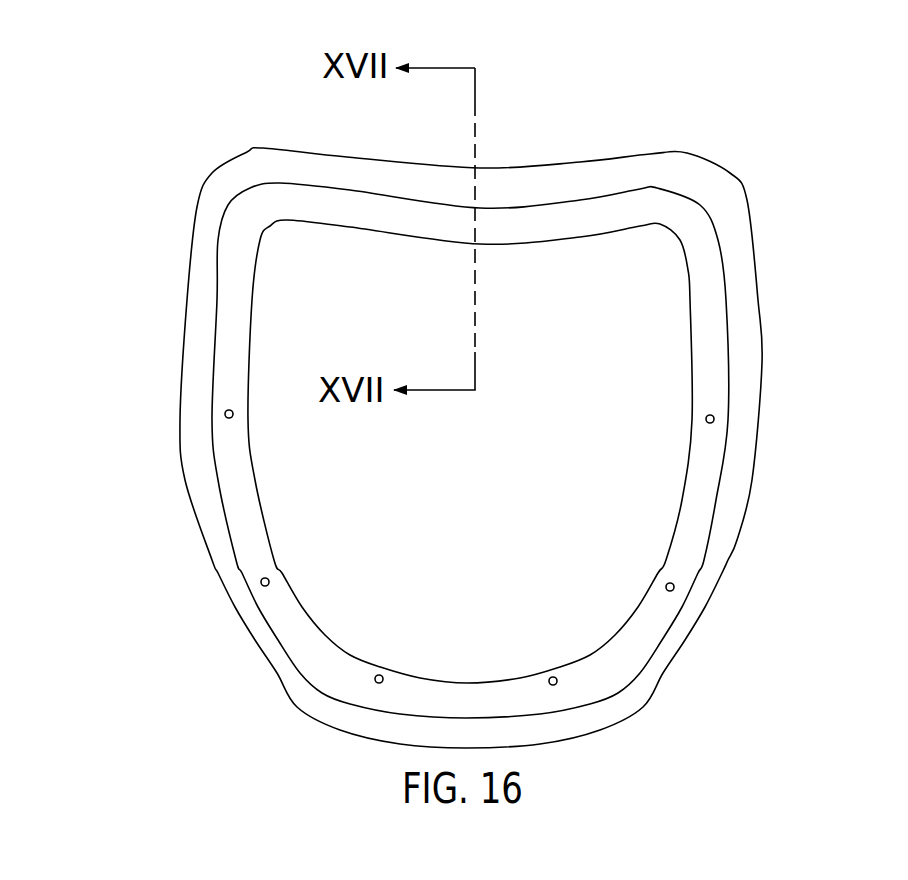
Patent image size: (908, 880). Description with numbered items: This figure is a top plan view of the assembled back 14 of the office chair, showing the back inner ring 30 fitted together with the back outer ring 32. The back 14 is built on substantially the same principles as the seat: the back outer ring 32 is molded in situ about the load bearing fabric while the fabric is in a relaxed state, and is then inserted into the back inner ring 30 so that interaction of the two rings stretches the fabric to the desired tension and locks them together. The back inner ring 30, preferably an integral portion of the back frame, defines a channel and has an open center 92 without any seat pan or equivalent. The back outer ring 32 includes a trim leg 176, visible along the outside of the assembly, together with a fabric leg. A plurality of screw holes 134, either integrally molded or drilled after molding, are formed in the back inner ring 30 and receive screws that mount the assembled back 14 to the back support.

The back 14 is at (519, 425).
The back inner ring 30 is at (692, 358).
The back outer ring 32 is at (762, 296).
The open center 92 is at (559, 404).
The screw holes 134 is at (233, 414).
The trim leg 176 is at (747, 428).